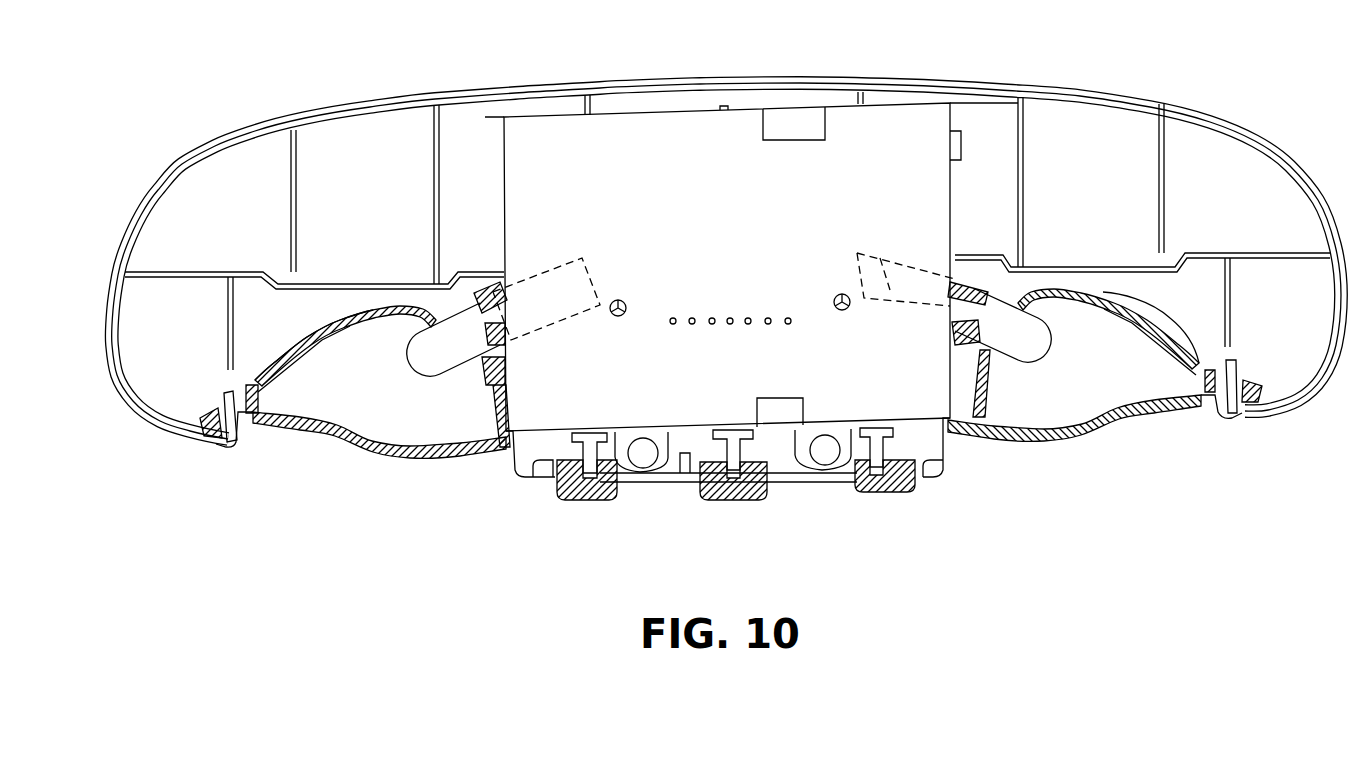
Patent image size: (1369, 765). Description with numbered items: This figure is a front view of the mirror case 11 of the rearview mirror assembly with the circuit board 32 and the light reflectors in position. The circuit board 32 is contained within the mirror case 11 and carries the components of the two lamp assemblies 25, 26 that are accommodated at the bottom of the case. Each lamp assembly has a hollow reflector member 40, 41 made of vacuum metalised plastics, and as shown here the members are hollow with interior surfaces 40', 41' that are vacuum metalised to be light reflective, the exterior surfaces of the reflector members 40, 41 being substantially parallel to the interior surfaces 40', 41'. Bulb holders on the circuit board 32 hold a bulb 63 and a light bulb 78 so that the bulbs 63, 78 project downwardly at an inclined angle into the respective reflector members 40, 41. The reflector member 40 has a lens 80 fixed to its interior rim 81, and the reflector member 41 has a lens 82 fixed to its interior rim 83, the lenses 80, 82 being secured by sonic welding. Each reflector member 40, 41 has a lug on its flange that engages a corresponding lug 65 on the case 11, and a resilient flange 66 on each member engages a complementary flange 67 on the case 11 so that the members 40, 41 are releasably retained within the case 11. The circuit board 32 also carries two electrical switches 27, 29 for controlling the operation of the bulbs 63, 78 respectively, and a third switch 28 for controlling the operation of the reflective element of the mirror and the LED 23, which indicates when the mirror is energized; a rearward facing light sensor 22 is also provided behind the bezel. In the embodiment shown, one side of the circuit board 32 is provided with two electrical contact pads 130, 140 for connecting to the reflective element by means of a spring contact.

The mirror case 11 is at (688, 90).
The electrical contact pad 130 is at (802, 127).
The circuit board 32 is at (909, 130).
The electrical contact pad 140 is at (793, 417).
The reflector member 40 is at (341, 327).
The interior surface 40' is at (304, 365).
The lamp assembly 25 is at (293, 338).
The reflector member 41 is at (1108, 291).
The interior surface 41' is at (1150, 344).
The lamp assembly 26 is at (1193, 322).
The bulb 63 is at (435, 363).
The light bulb 78 is at (1020, 353).
The lens 80 is at (370, 448).
The lens 82 is at (1123, 417).
The interior rim 81 is at (272, 428).
The interior rim 83 is at (1197, 397).
The resilient flange 66 is at (226, 393).
The complementary flange 67 is at (207, 440).
The lug 65 is at (542, 467).
The switch 27 is at (600, 487).
The switch 28 is at (748, 483).
The switch 29 is at (897, 487).
The LED 23 is at (645, 460).
The rearward facing light sensor 22 is at (825, 457).